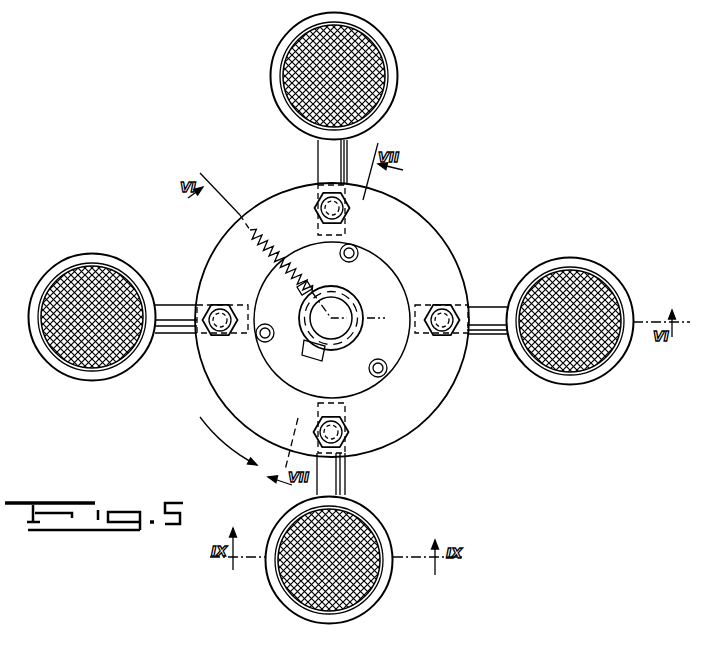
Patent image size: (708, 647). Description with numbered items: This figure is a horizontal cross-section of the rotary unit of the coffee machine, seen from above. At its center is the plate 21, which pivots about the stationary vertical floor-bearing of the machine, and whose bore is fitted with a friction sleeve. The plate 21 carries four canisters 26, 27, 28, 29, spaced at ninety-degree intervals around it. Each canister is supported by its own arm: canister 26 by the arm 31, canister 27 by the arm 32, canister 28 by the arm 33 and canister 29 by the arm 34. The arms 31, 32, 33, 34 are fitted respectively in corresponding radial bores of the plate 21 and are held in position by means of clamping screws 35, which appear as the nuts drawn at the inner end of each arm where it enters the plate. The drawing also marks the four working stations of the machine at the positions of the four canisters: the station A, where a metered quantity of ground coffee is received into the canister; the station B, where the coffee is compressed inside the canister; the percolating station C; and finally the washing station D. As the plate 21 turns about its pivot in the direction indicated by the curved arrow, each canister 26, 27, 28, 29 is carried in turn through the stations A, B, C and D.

The plate 21 is at (428, 215).
The canister 26 is at (343, 76).
The canister 27 is at (94, 308).
The canister 28 is at (338, 560).
The canister 29 is at (580, 321).
The arm 31 is at (349, 155).
The arm 32 is at (170, 309).
The arm 33 is at (346, 486).
The arm 34 is at (487, 311).
The clamping screw 35 is at (223, 310).
The station A is at (394, 57).
The station B is at (142, 353).
The percolating station C is at (388, 530).
The washing station D is at (627, 295).